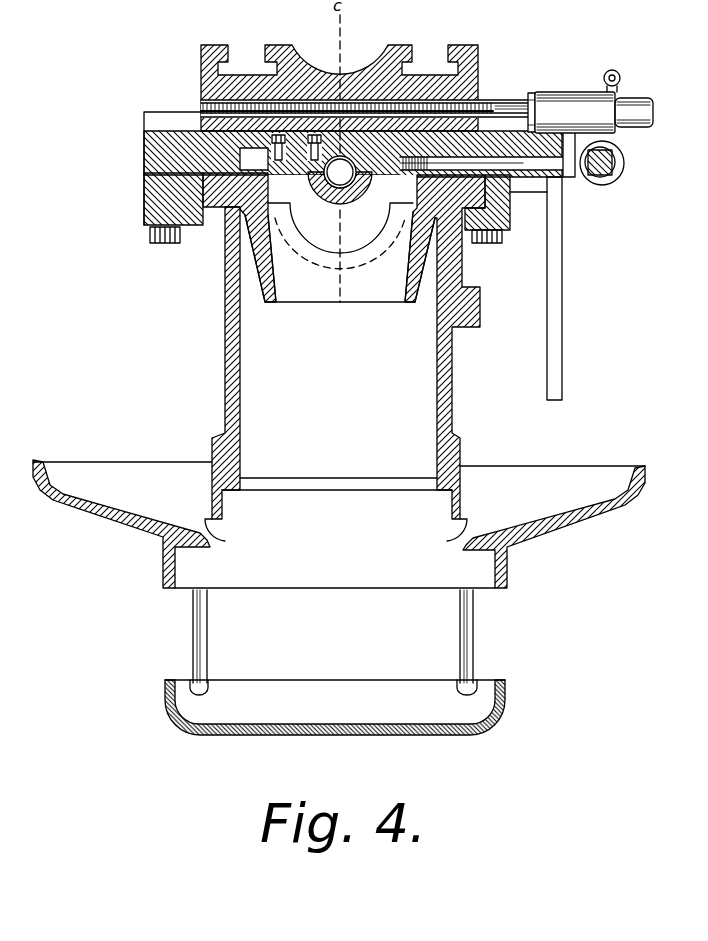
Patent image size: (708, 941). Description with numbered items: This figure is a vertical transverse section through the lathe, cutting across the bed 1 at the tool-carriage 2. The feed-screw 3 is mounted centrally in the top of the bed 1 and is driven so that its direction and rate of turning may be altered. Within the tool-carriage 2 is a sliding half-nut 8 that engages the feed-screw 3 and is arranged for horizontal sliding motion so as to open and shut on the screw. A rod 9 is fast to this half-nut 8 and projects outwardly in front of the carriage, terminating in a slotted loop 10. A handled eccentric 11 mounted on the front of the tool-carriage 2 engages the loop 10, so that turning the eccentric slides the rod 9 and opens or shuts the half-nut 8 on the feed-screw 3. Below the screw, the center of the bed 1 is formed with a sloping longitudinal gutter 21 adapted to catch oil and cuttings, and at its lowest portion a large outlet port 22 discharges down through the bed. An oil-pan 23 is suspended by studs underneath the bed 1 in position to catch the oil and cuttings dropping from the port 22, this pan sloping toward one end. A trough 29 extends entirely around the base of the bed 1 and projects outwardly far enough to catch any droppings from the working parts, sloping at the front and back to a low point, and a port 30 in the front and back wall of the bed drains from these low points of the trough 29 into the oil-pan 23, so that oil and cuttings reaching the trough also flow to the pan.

The bed 1 is at (233, 373).
The tool-carriage 2 is at (144, 152).
The feed-screw 3 is at (333, 181).
The sliding half-nut 8 is at (363, 188).
The rod 9 is at (522, 160).
The slotted loop 10 is at (610, 175).
The handled eccentric 11 is at (613, 165).
The sloping longitudinal gutter 21 is at (358, 245).
The outlet port 22 is at (325, 298).
The oil-pan 23 is at (287, 673).
The trough 29 is at (568, 507).
The port 30 is at (467, 537).